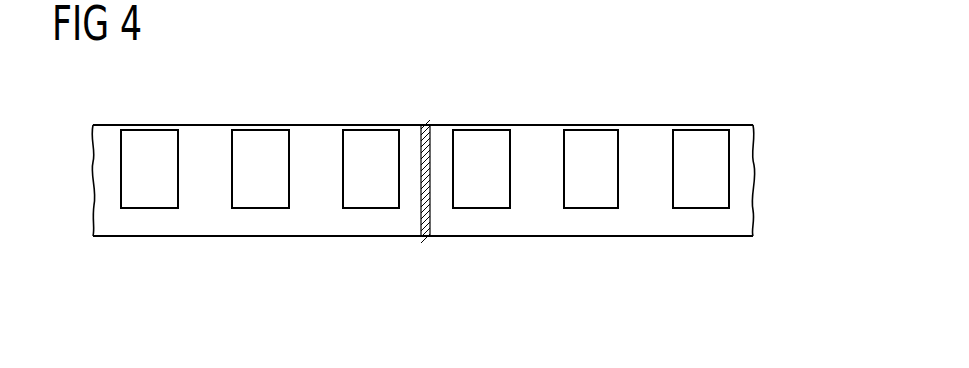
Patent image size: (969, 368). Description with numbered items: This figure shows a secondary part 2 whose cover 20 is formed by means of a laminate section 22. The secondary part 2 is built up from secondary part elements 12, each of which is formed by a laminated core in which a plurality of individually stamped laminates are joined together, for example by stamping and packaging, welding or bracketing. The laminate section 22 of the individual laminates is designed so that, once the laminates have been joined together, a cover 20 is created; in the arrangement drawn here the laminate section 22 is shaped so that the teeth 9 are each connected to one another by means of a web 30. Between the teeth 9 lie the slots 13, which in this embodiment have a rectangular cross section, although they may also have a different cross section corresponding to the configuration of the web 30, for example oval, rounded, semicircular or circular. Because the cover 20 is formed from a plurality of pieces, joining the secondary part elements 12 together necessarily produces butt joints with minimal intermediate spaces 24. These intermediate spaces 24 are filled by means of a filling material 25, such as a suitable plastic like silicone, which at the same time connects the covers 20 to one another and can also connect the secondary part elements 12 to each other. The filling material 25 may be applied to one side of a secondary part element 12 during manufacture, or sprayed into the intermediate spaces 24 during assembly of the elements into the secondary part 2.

The secondary part 2 is at (772, 92).
The teeth 9 is at (534, 198).
The secondary part elements 12 is at (146, 236).
The slots 13 is at (250, 197).
The cover 20 is at (480, 125).
The laminate section 22 is at (643, 158).
The intermediate spaces 24 is at (425, 121).
The filling material 25 is at (425, 236).
The web 30 is at (258, 128).